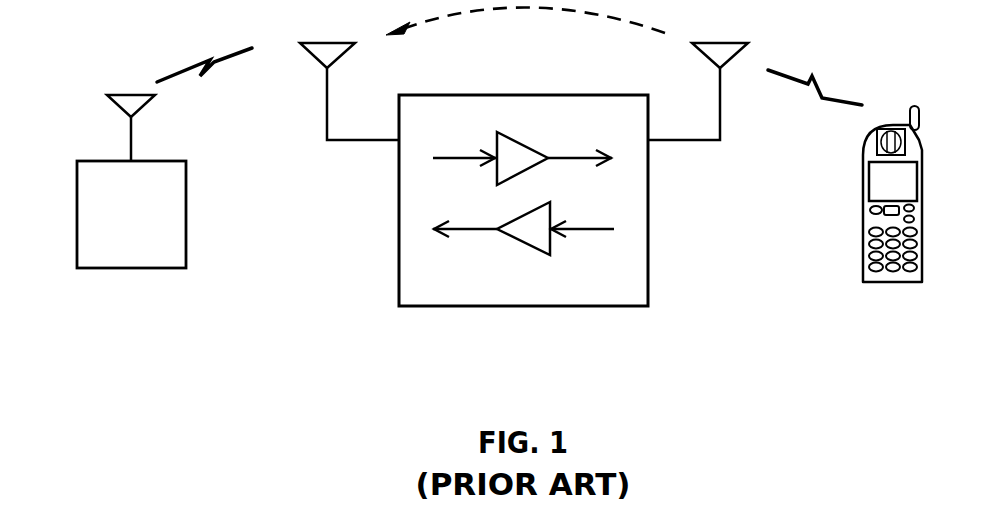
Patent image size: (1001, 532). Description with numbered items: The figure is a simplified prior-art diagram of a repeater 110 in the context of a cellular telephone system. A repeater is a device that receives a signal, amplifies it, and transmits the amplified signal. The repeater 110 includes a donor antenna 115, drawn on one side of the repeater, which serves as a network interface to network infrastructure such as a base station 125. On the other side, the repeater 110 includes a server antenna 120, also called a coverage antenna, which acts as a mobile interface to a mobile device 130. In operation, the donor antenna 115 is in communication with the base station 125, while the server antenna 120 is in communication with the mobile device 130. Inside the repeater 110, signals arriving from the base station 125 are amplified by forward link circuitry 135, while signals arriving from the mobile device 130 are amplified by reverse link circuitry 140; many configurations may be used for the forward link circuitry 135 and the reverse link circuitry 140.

The repeater 110 is at (523, 216).
The donor antenna 115 is at (343, 57).
The server antenna 120 is at (703, 57).
The base station 125 is at (148, 268).
The mobile device 130 is at (893, 283).
The forward link circuitry 135 is at (523, 143).
The reverse link circuitry 140 is at (528, 245).